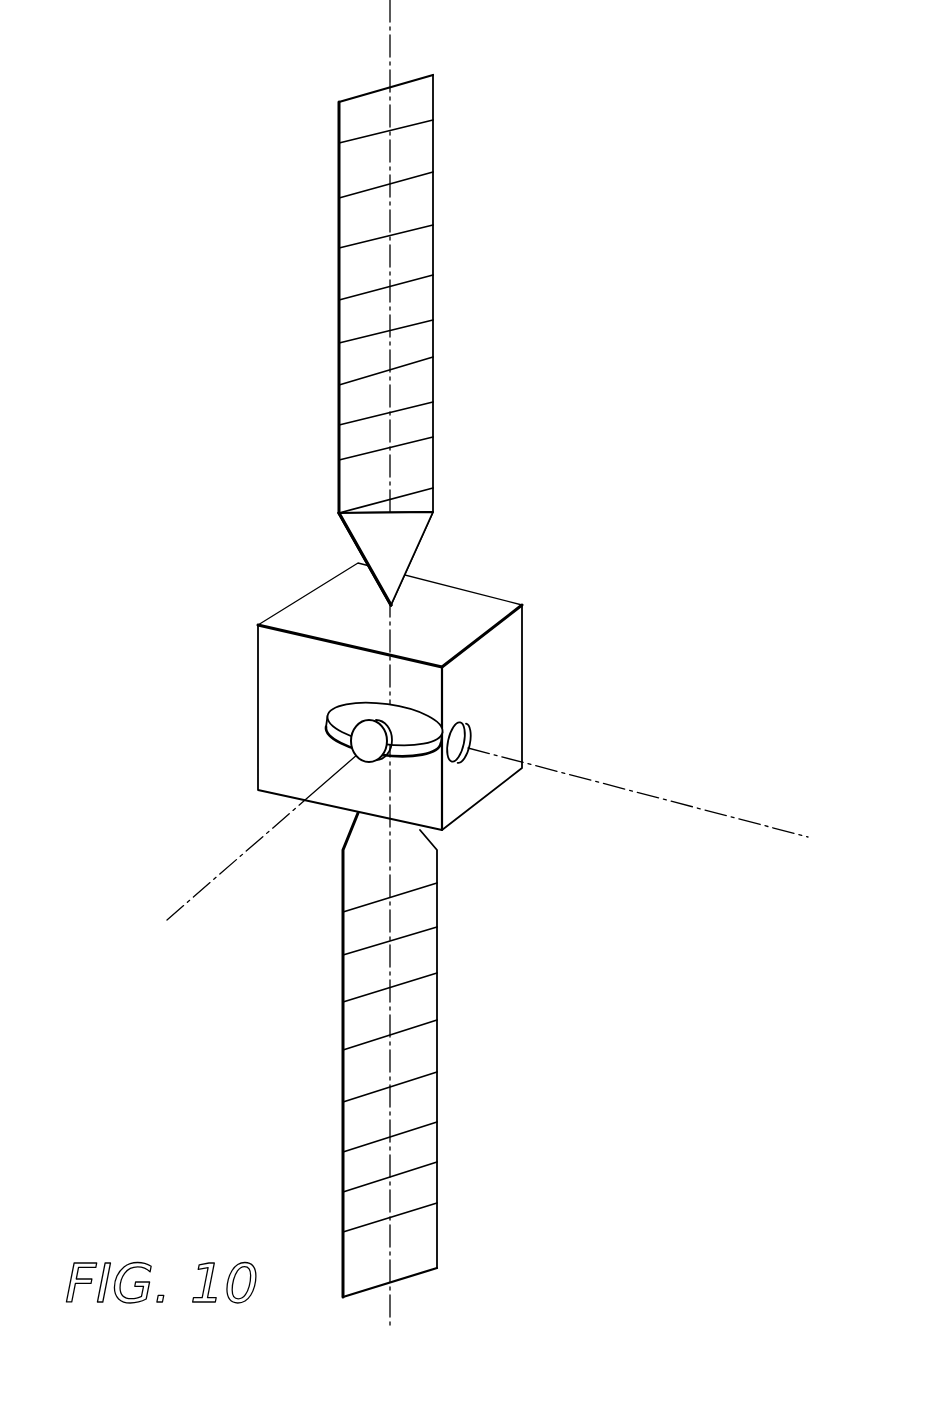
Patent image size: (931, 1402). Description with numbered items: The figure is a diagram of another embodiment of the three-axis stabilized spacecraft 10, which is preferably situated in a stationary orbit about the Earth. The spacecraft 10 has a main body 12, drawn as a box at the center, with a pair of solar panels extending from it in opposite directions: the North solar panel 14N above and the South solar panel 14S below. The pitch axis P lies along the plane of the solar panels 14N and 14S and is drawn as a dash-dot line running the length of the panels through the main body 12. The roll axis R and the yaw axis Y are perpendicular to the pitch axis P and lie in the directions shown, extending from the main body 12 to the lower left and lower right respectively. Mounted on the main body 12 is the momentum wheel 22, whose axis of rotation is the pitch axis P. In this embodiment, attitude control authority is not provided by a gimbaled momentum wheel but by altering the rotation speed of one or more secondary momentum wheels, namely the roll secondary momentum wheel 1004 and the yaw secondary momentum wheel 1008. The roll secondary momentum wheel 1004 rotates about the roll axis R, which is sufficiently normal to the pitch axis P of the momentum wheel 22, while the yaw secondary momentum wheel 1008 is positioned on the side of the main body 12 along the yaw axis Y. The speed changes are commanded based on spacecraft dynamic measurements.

The spacecraft 10 is at (450, 663).
The main body 12 is at (292, 590).
The North solar panel 14N is at (423, 337).
The South solar panel 14S is at (415, 960).
The momentum wheel 22 is at (357, 702).
The roll secondary momentum wheel 1004 is at (370, 762).
The yaw secondary momentum wheel 1008 is at (468, 728).
The pitch axis P is at (392, 527).
The roll axis R is at (258, 838).
The yaw axis Y is at (637, 793).